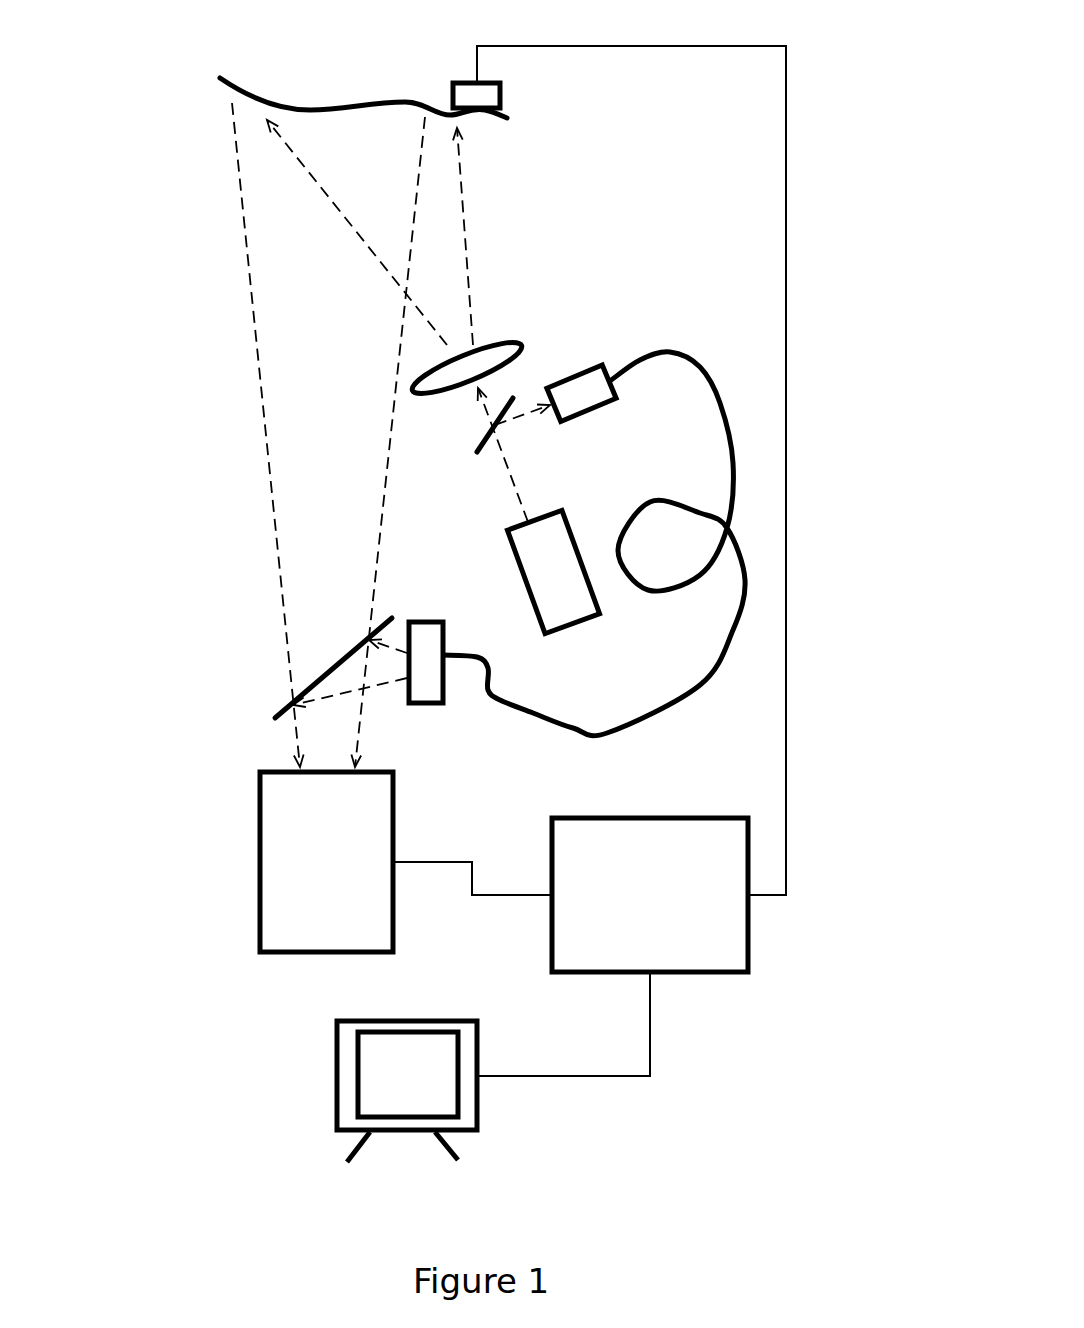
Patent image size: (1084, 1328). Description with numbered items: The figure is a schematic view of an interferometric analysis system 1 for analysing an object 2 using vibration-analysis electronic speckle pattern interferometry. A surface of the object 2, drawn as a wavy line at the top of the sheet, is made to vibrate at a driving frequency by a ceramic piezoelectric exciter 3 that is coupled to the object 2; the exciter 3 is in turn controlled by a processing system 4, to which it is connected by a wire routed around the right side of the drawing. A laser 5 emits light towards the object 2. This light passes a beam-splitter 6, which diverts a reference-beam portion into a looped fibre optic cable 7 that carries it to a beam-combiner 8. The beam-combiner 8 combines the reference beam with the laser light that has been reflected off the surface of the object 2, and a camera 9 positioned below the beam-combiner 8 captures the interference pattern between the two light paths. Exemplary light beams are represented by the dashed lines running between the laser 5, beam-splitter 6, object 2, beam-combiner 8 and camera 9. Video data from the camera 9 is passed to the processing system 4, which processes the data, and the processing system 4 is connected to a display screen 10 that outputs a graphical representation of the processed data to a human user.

The interferometric analysis system 1 is at (772, 1150).
The object 2 is at (343, 103).
The ceramic piezoelectric exciter 3 is at (500, 98).
The processing system 4 is at (740, 953).
The laser 5 is at (577, 610).
The beam-splitter 6 is at (477, 455).
The fibre optic cable 7 is at (702, 677).
The beam-combiner 8 is at (287, 705).
The camera 9 is at (275, 885).
The display screen 10 is at (345, 1093).